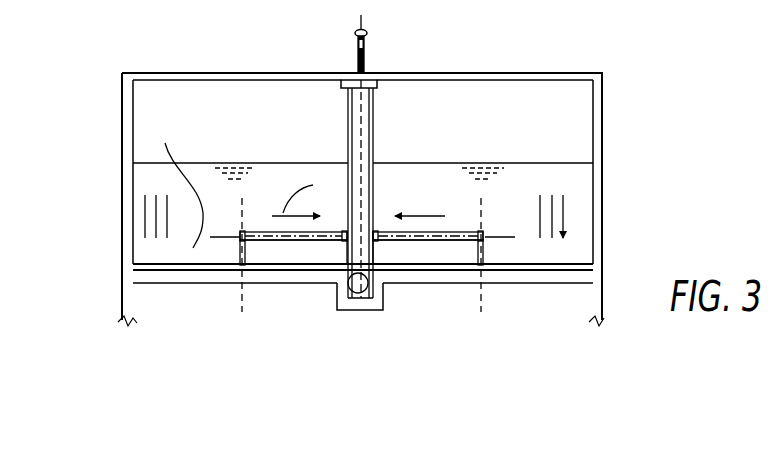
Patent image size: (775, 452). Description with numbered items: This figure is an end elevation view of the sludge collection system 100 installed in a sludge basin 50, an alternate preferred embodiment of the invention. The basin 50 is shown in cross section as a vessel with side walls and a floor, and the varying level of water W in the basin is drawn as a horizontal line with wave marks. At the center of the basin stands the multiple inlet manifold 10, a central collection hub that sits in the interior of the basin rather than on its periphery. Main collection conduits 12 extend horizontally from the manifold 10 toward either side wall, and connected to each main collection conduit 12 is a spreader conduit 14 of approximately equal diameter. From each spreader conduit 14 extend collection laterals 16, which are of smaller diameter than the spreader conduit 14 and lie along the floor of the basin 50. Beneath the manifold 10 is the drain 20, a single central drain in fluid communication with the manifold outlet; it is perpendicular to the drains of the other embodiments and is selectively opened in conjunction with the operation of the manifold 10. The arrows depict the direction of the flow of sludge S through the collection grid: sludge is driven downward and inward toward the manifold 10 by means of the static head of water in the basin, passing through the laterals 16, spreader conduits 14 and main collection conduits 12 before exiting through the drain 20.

The multiple inlet manifold 10 is at (368, 157).
The main collection conduit 12 is at (265, 232).
The spreader conduit 14 is at (243, 272).
The collection lateral 16 is at (195, 282).
The main drain conduit 20 is at (363, 296).
The sludge basin 50 is at (602, 103).
The sludge collection system 100 is at (176, 182).
The water level W is at (143, 163).
The sludge flow S is at (625, 182).